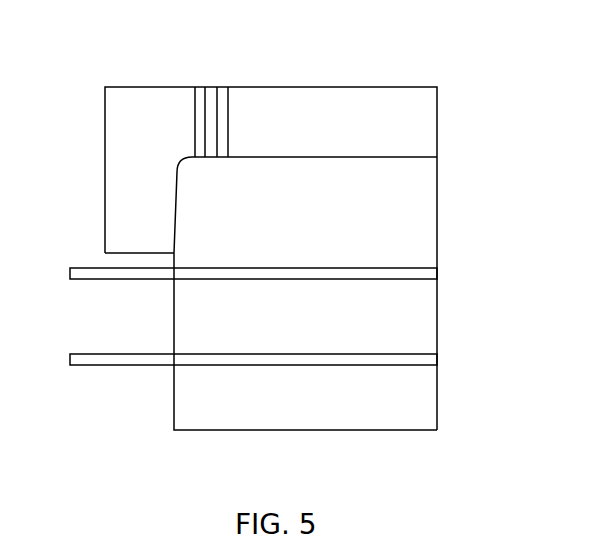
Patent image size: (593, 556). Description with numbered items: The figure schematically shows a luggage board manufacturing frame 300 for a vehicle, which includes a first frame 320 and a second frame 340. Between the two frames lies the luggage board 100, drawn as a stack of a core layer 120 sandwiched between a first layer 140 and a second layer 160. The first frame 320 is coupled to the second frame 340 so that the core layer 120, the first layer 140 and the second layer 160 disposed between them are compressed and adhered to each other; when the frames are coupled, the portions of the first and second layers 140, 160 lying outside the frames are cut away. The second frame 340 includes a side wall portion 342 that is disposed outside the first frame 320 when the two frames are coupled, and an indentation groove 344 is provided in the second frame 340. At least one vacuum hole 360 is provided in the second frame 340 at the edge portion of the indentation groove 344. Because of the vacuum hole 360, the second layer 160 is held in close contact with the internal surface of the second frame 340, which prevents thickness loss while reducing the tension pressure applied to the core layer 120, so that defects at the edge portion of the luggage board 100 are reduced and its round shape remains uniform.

The luggage board manufacturing frame 300 is at (62, 34).
The second frame 340 is at (407, 120).
The side wall portion 342 is at (124, 217).
The indentation groove 344 is at (212, 200).
The vacuum hole 360 is at (222, 122).
The first frame 320 is at (427, 398).
The luggage board 100 is at (511, 270).
The second layer 160 is at (427, 274).
The core layer 120 is at (427, 318).
The first layer 140 is at (427, 359).